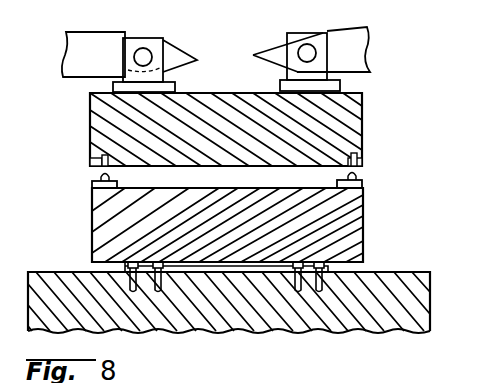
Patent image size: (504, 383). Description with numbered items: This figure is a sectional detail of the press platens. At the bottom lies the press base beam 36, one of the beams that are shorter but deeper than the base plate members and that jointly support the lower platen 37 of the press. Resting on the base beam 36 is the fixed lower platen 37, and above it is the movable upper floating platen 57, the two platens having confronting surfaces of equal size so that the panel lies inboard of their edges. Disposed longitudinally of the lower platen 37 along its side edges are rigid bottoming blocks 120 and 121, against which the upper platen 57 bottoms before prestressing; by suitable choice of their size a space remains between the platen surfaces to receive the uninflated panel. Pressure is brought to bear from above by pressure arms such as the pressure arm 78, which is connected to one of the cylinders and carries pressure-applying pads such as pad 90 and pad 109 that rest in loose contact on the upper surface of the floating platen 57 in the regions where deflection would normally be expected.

The pressure arm 78 is at (87, 46).
The pressure-applying pad 90 is at (170, 84).
The pressure-applying pad 109 is at (275, 88).
The upper floating platen 57 is at (355, 130).
The lower platen 37 is at (356, 211).
The press base beam 36 is at (430, 279).
The bottoming block 120 is at (95, 182).
The bottoming block 121 is at (360, 178).